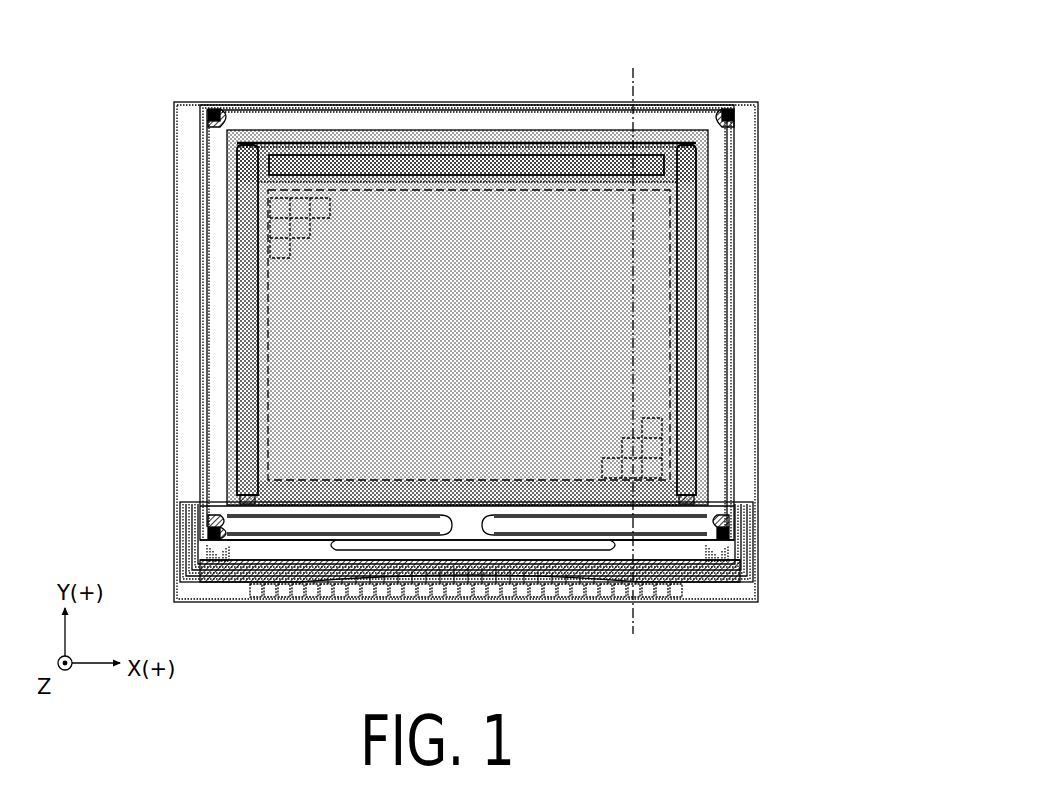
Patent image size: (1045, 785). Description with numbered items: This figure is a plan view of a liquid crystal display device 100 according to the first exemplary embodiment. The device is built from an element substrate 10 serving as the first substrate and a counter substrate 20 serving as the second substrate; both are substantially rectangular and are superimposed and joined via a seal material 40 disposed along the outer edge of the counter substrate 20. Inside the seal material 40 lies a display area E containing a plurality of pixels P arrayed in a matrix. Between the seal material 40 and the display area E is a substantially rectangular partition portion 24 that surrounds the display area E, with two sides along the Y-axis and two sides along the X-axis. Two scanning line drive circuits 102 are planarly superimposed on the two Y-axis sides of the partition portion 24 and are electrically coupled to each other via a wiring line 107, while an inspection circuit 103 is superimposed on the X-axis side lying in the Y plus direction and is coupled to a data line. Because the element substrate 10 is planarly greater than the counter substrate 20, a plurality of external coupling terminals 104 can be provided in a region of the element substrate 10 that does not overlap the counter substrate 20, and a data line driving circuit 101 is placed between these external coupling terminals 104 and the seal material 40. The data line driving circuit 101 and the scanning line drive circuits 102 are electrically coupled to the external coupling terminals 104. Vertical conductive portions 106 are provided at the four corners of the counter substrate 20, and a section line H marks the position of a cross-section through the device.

The liquid crystal display device 100 is at (803, 28).
The element substrate 10 is at (285, 101).
The counter substrate 20 is at (383, 107).
The seal material 40 is at (729, 228).
The wiring line 107 is at (472, 132).
The inspection circuit 103 is at (550, 165).
The scanning line drive circuit 102 is at (246, 258).
The display area E is at (672, 350).
The pixel P is at (292, 252).
The partition portion 24 is at (347, 496).
The data line driving circuit 101 is at (243, 548).
The external coupling terminal 104 is at (340, 590).
The vertical conductive portion 106 is at (207, 115).
The section line H-H' H is at (640, 76).